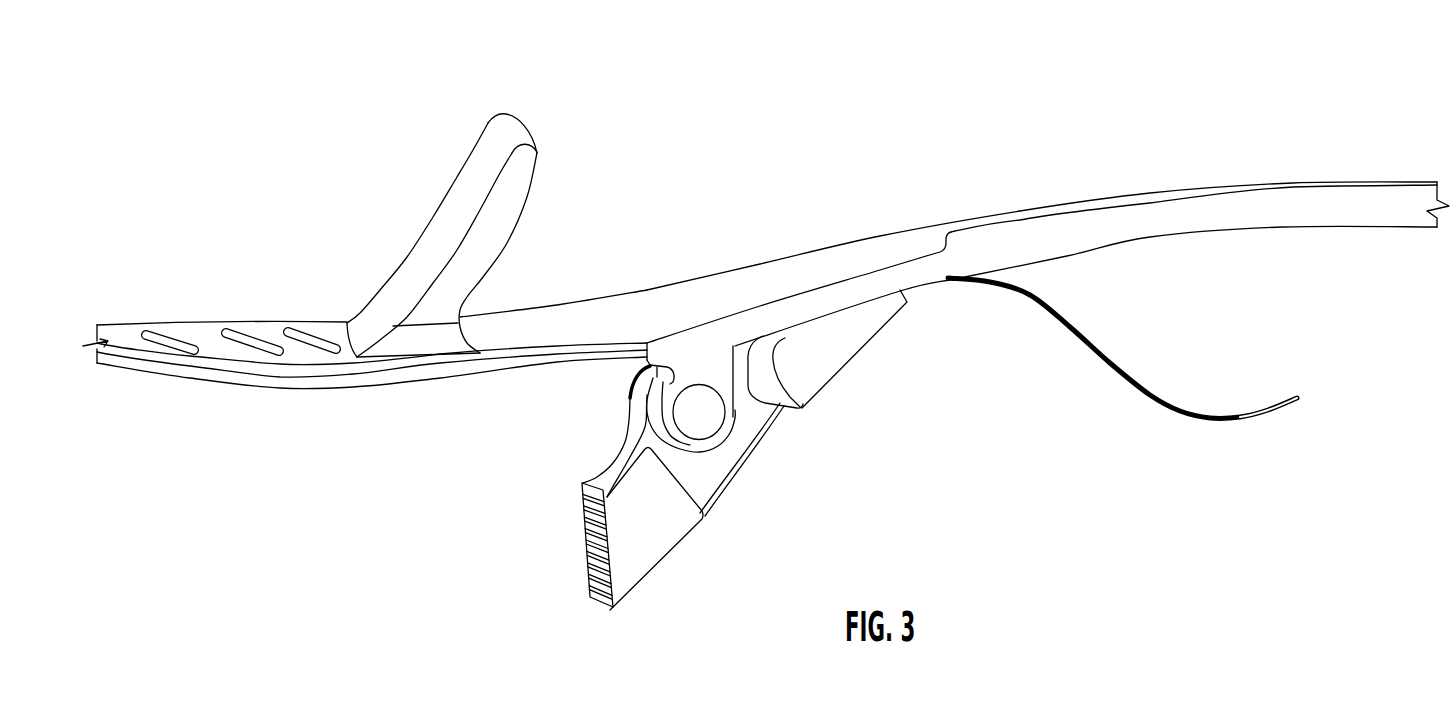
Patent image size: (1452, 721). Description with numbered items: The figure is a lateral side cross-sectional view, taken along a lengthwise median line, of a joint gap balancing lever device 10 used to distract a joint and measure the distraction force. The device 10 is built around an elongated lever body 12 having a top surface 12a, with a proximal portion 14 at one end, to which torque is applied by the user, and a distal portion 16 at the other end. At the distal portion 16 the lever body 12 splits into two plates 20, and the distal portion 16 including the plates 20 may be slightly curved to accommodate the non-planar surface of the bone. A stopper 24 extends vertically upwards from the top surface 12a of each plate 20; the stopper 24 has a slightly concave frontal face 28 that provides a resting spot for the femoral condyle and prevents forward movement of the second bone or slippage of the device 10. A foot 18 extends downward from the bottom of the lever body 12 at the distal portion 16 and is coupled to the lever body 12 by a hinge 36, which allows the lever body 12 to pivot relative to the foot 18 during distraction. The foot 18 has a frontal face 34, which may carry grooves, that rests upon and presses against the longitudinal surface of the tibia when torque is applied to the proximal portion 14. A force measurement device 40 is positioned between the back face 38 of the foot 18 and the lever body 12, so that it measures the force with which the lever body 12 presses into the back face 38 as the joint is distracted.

The joint gap balancing lever device 10 is at (1178, 81).
The lever body 12 is at (1003, 213).
The top surface 12a is at (760, 282).
The proximal portion 14 is at (1357, 186).
The distal portion 16 is at (562, 306).
The foot 18 is at (730, 490).
The plates 20 is at (200, 323).
The stopper 24 is at (497, 122).
The frontal face 28 is at (470, 176).
The frontal face 34 is at (598, 550).
The hinge 36 is at (725, 420).
The back face 38 is at (835, 322).
The force measurement device 40 is at (1131, 384).